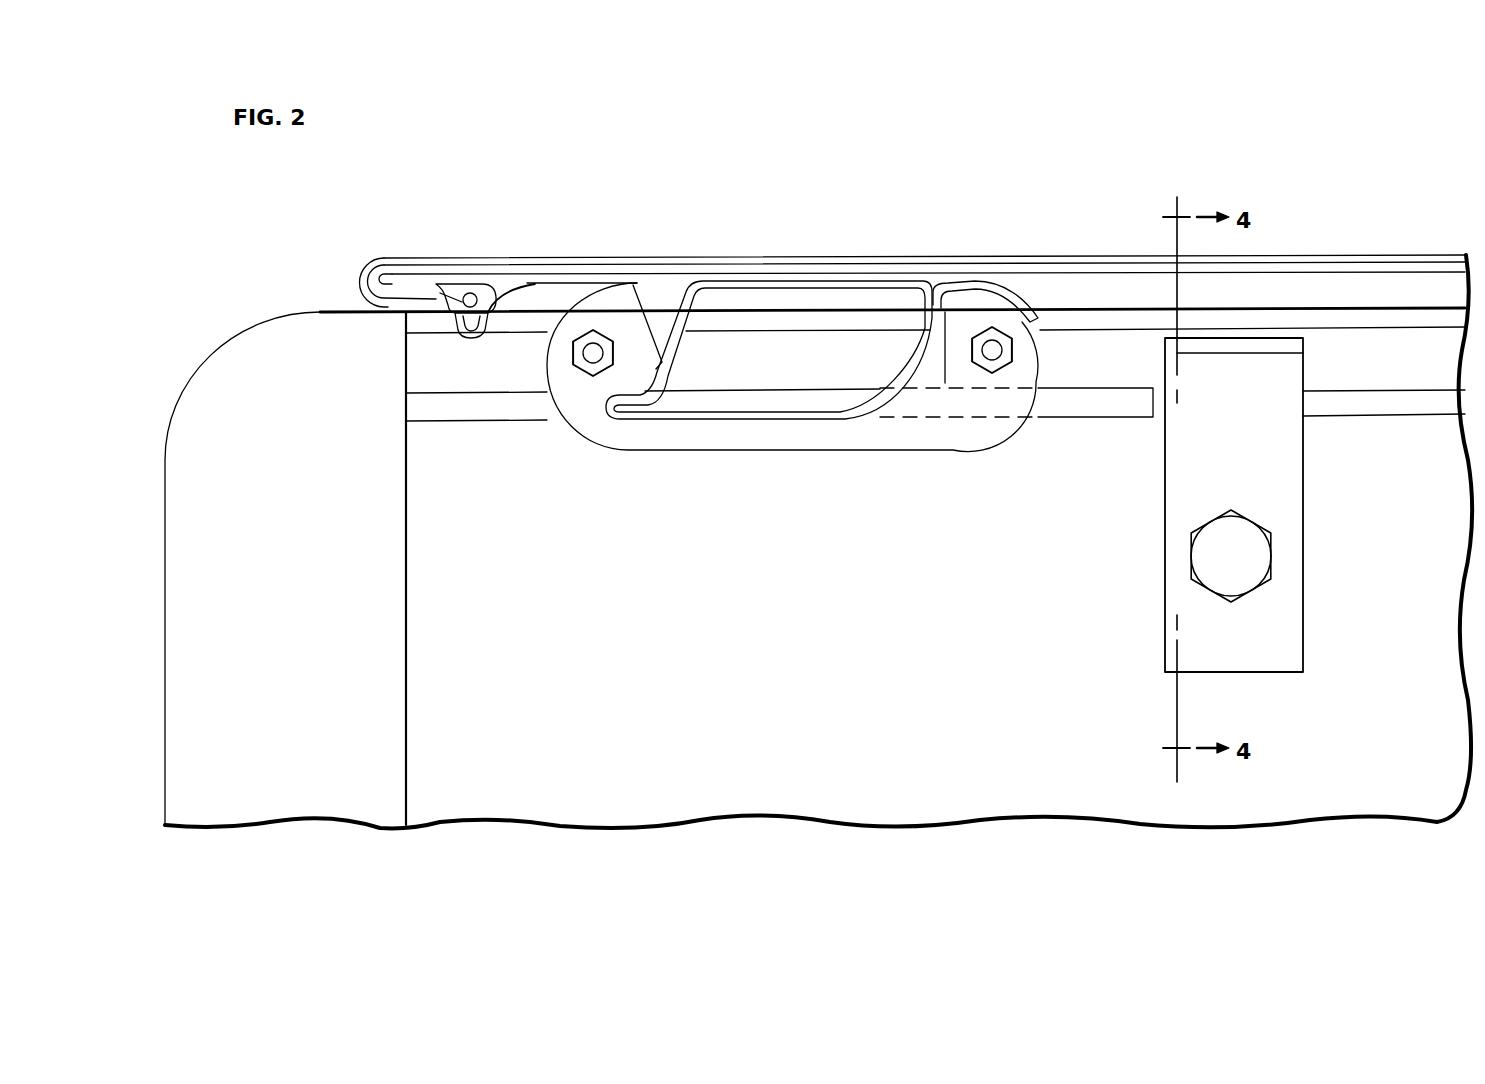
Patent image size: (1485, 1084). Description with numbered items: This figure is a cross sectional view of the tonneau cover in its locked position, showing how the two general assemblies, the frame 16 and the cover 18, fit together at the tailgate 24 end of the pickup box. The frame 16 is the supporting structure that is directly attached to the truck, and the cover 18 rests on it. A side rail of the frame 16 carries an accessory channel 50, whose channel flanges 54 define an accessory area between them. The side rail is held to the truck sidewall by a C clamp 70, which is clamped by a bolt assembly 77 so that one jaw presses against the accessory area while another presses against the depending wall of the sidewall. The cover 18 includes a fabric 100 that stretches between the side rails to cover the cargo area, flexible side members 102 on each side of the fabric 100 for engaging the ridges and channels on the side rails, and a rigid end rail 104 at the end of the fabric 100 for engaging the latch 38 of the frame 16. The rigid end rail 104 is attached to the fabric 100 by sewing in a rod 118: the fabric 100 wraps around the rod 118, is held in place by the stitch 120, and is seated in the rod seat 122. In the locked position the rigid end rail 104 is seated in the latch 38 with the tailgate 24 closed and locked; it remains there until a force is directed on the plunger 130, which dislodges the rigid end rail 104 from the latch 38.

The frame 16 is at (771, 365).
The cover 18 is at (717, 242).
The tailgate 24 is at (295, 641).
The latch 38 is at (813, 442).
The accessory channel 50 is at (1428, 378).
The channel flanges 54 is at (1340, 322).
The C clamp 70 is at (1302, 525).
The bolt assembly 77 is at (1243, 578).
The fabric 100 is at (1322, 256).
The flexible side members 102 is at (860, 268).
The rigid end rail 104 is at (932, 280).
The rod 118 is at (473, 298).
The stitch 120 is at (426, 303).
The rod seat 122 is at (462, 352).
The plunger 130 is at (1077, 400).